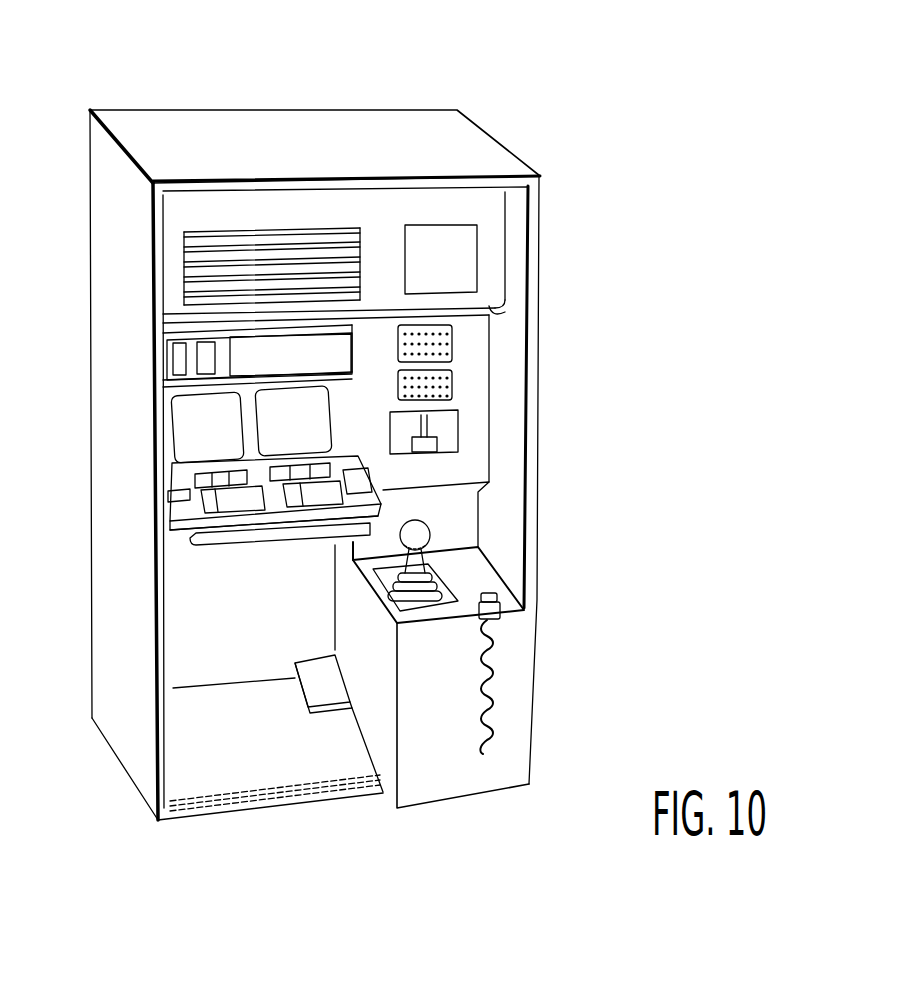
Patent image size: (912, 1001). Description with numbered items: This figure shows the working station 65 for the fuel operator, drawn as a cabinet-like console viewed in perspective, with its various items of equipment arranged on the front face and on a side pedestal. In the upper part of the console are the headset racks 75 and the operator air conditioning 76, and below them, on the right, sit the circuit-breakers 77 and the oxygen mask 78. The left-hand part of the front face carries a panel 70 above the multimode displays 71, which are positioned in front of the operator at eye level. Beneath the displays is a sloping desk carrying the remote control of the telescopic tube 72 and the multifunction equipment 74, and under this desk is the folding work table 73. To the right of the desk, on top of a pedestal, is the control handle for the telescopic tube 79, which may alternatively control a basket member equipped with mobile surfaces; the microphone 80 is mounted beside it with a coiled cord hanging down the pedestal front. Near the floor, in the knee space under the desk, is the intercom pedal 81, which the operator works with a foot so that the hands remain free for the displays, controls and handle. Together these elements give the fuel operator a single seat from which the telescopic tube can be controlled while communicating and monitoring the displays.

The working station 65 is at (145, 108).
The status display panel 70 is at (240, 350).
The multimode displays 71 is at (268, 433).
The remote control of the telescopic tube 72 is at (182, 500).
The folding work table 73 is at (226, 540).
The multifunction equipment 74 is at (232, 502).
The headset racks 75 is at (465, 240).
The operator air conditioning 76 is at (495, 308).
The circuit-breakers 77 is at (450, 345).
The oxygen mask 78 is at (437, 428).
The control handle for the telescopic tube 79 is at (422, 530).
The microphone 80 is at (500, 608).
The intercom pedal 81 is at (306, 682).